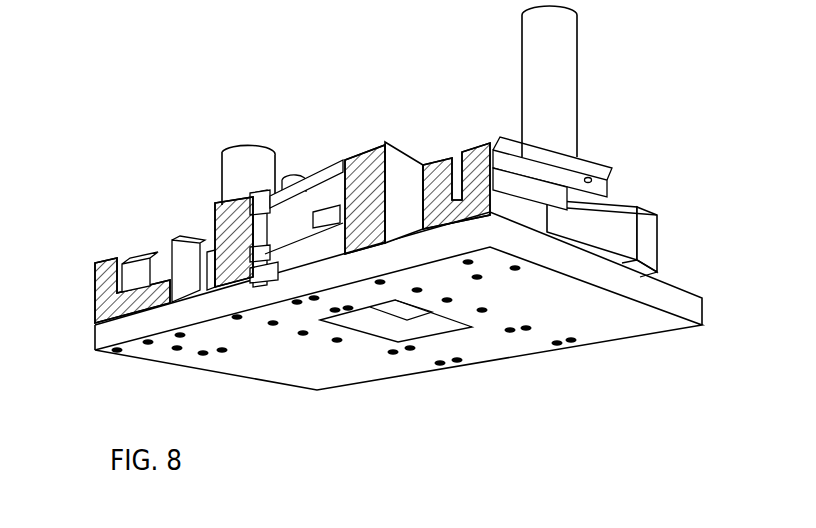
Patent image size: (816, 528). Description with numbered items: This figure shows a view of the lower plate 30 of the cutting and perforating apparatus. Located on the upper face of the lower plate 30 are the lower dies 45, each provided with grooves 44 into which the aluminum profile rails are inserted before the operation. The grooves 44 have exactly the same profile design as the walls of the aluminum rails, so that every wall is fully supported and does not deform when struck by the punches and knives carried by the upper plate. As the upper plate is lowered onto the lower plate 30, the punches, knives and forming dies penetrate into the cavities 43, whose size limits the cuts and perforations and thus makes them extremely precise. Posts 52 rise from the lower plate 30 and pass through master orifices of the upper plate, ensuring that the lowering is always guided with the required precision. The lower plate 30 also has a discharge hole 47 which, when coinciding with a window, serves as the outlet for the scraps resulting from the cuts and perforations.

The lower plate 30 is at (667, 303).
The cavities 43 is at (207, 244).
The grooves 44 is at (120, 257).
The lower dies 45 is at (110, 307).
The discharge hole 47 is at (407, 330).
The posts 52 is at (255, 160).